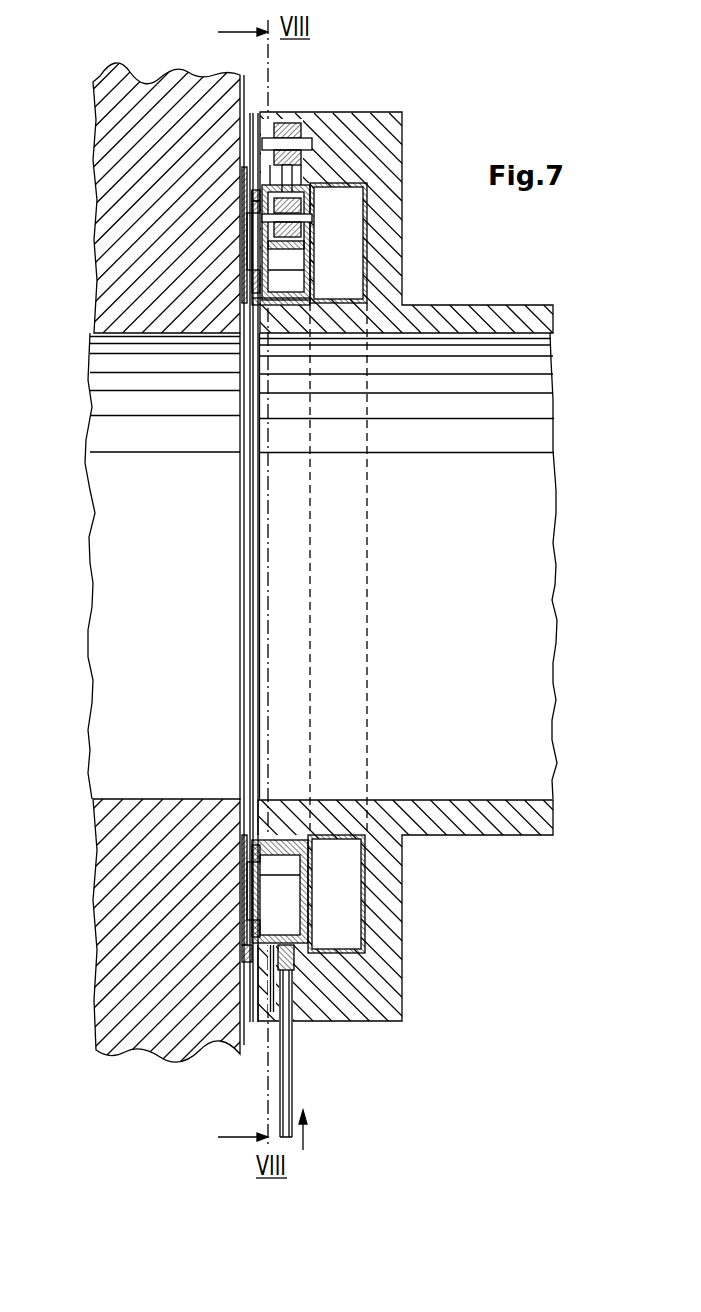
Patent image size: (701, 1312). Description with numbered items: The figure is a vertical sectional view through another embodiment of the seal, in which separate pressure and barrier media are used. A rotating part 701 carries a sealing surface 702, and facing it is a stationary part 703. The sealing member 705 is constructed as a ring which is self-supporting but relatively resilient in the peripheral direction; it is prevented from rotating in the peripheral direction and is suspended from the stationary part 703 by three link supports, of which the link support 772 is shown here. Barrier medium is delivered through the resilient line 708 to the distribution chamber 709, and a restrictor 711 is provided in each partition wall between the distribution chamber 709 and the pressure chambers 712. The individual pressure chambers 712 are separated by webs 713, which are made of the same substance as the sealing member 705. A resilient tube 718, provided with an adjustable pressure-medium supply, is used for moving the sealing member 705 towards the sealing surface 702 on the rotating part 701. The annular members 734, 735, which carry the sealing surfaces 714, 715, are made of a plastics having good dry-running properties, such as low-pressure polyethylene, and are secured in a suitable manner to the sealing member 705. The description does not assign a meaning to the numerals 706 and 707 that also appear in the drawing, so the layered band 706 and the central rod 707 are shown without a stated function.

The rotating part 701 is at (170, 78).
The sealing surface 702 is at (245, 176).
The stationary part 703 is at (360, 111).
The sealing member 705 is at (258, 253).
The laminated stack 706 is at (246, 352).
The rod 707 is at (250, 112).
The resilient line 708 is at (292, 1076).
The distribution chamber 709 is at (296, 286).
The restrictor 711 is at (300, 266).
The pressure chamber 712 is at (256, 207).
The web 713 is at (250, 233).
The sealing surface 714 is at (244, 848).
The sealing surface 715 is at (243, 956).
The resilient tube 718 is at (380, 230).
The annular member 734 is at (255, 197).
The annular member 735 is at (255, 284).
The link support 772 is at (288, 186).